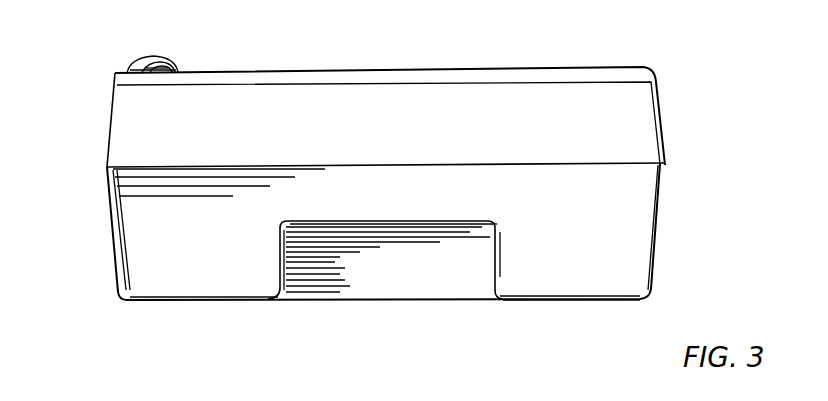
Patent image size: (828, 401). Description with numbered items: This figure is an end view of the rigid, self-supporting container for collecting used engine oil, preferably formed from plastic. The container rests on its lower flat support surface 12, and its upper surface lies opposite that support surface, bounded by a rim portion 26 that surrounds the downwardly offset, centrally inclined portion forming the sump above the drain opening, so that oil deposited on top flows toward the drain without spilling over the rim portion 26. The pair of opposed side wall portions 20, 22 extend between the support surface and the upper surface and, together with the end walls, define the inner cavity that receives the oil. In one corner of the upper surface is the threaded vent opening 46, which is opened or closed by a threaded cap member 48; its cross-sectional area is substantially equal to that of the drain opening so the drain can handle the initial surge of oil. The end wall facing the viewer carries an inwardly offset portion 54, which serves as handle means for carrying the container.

The lower flat support surface 12 is at (548, 300).
The side wall portion 20 is at (662, 188).
The side wall portion 22 is at (108, 182).
The rim portion 26 is at (217, 71).
The vent opening 46 is at (150, 72).
The cap member 48 is at (155, 61).
The inwardly offset portion 54 is at (390, 270).